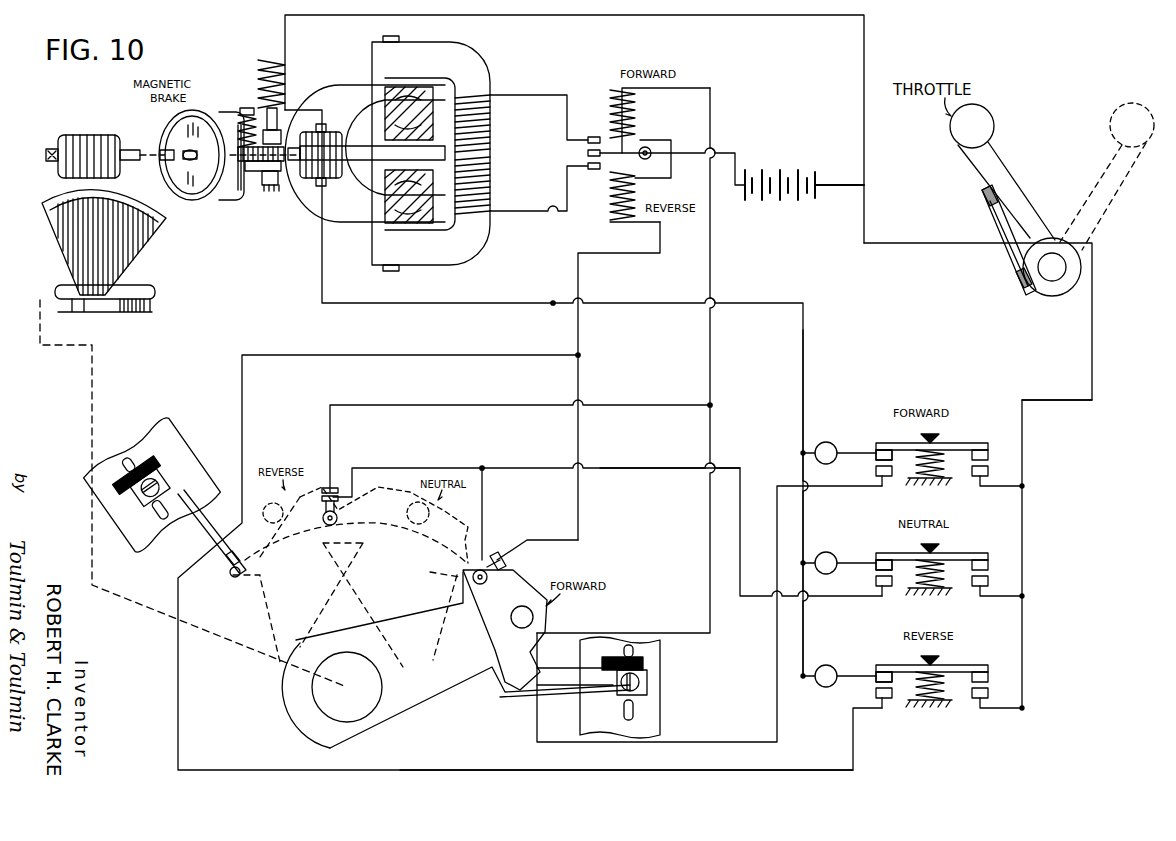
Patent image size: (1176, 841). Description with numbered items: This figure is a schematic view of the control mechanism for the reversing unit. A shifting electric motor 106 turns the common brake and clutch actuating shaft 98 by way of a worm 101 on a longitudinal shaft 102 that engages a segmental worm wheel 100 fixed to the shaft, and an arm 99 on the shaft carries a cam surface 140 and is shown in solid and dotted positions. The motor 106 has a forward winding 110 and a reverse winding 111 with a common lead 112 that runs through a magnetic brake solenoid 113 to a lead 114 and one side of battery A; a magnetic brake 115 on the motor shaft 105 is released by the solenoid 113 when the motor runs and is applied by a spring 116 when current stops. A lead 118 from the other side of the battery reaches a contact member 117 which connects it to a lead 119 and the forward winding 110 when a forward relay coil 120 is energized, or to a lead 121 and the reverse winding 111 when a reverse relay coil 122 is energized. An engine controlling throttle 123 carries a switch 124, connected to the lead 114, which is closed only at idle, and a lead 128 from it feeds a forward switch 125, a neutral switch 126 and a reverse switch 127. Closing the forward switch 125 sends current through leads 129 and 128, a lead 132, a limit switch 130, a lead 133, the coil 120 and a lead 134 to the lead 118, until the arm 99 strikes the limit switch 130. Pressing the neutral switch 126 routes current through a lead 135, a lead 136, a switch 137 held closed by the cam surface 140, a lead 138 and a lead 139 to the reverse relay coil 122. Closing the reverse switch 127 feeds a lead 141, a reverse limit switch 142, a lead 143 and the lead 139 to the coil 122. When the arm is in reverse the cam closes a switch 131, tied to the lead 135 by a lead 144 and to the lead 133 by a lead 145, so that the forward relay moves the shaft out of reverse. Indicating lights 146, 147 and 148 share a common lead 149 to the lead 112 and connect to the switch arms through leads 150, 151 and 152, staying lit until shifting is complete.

The common brake and clutch actuating shaft 98 is at (146, 287).
The arm 99 is at (443, 700).
The segmental worm wheel 100 is at (54, 230).
The worm 101 is at (112, 135).
The longitudinal shaft 102 is at (50, 151).
The shaft of shifting electric motor 105 is at (300, 184).
The shifting electric motor 106 is at (444, 260).
The forward winding 110 is at (489, 136).
The reverse winding 111 is at (489, 194).
The common lead 112 is at (531, 304).
The magnetic brake solenoid 113 is at (283, 84).
The lead 114 is at (788, 22).
The magnetic brake 115 is at (234, 197).
The spring 116 is at (233, 109).
The contact member 117 is at (666, 159).
The lead 118 is at (726, 153).
The lead 119 is at (566, 80).
The forward relay coil 120 is at (612, 116).
The lead 121 is at (630, 215).
The reverse relay coil 122 is at (612, 215).
The engine controlling throttle 123 is at (1024, 188).
The switch 124 is at (993, 229).
The forward switch 125 is at (967, 441).
The neutral switch 126 is at (970, 551).
The reverse switch 127 is at (977, 663).
The lead 128 is at (1078, 402).
The lead 129 is at (952, 246).
The limit switch 130 is at (572, 690).
The switch 131 is at (338, 480).
The lead 132 is at (750, 742).
The lead 133 is at (706, 618).
The lead 134 is at (684, 128).
The lead 135 is at (674, 472).
The lead 136 is at (484, 530).
The switch 137 is at (508, 568).
The lead 138 is at (576, 543).
The lead 139 is at (632, 253).
The cam surface 140 is at (508, 638).
The lead 141 is at (830, 772).
The reverse limit switch 142 is at (200, 542).
The lead 143 is at (380, 359).
The lead 144 is at (398, 472).
The lead 145 is at (468, 410).
The forward indicating light 146 is at (830, 444).
The neutral light 147 is at (834, 554).
The reverse light 148 is at (836, 667).
The common lead 149 is at (808, 380).
The lead 150 is at (868, 456).
The lead 151 is at (868, 566).
The lead 152 is at (868, 678).